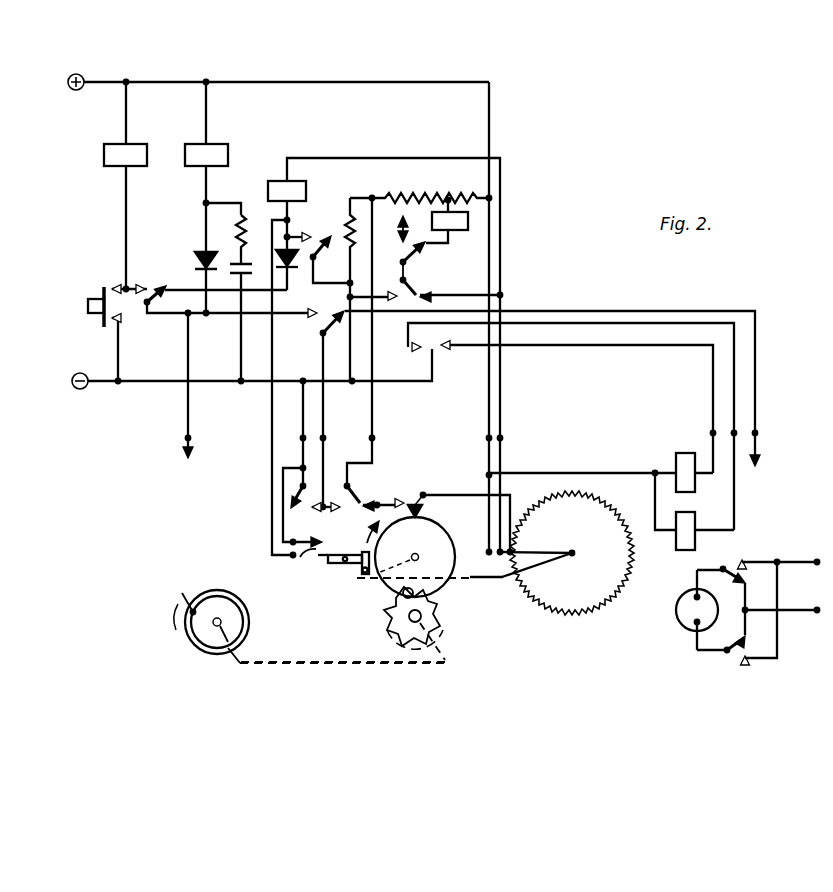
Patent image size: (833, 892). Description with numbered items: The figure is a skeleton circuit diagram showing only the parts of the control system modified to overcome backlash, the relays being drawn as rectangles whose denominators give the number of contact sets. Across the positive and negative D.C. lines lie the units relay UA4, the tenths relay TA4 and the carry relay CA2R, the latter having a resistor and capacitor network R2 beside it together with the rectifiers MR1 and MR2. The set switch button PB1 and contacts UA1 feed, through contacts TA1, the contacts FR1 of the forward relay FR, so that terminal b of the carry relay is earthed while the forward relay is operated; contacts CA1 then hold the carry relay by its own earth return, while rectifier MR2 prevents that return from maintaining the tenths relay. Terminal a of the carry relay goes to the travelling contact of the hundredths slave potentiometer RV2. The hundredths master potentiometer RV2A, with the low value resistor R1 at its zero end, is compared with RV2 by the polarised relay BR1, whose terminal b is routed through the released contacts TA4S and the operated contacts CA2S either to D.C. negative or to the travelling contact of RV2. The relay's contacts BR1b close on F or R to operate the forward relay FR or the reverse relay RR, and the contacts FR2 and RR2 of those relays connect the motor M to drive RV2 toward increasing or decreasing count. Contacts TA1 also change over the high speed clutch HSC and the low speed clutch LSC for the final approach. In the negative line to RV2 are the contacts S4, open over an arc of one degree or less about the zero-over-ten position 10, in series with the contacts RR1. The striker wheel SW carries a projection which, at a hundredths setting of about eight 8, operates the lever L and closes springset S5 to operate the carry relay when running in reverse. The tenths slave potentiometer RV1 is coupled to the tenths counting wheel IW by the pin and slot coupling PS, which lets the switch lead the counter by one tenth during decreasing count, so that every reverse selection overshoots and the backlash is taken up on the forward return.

The units relay UA4 is at (92, 167).
The tenths relay TA4 is at (262, 162).
The carry relay CA2R is at (315, 141).
The resistor and capacitor R2 is at (229, 292).
The rectifier MR1 is at (198, 258).
The rectifier MR2 is at (293, 266).
The set switch button PB1 is at (116, 322).
The contacts of units relay UA1 is at (230, 299).
The high speed clutch HSC is at (194, 408).
The contacts of carry relay CA1 is at (332, 258).
The resistor R1 is at (345, 212).
The hundredths master potentiometer RV2A is at (431, 189).
The polarised relay BR1 is at (462, 212).
The contacts of tenths relay TA4S is at (419, 248).
The contacts of carry relay CA2S is at (452, 289).
The contacts of tenths relay TA1 is at (523, 409).
The low speed clutch LSC is at (773, 453).
The contacts of polarised relay BR1b is at (567, 426).
The forward relay FR is at (697, 432).
The reverse relay RR is at (731, 522).
The contacts of reverse relay RR1 is at (374, 354).
The contacts S4 is at (459, 513).
The contacts of forward relay FR1 is at (305, 461).
The lever L is at (326, 521).
The contacts S5 is at (308, 560).
The striker wheel SW is at (430, 557).
The tenths counting wheel IW is at (385, 622).
The hundredths slave potentiometer RV2 is at (568, 553).
The hundredths setting of eight 8 is at (499, 612).
The 0/10 position 10 is at (497, 552).
The motor M is at (701, 610).
The contacts of forward relay FR2 is at (770, 590).
The contacts of reverse relay RR2 is at (740, 622).
The tenths slave potentiometer RV1 is at (203, 654).
The pin and slot coupling PS is at (187, 600).